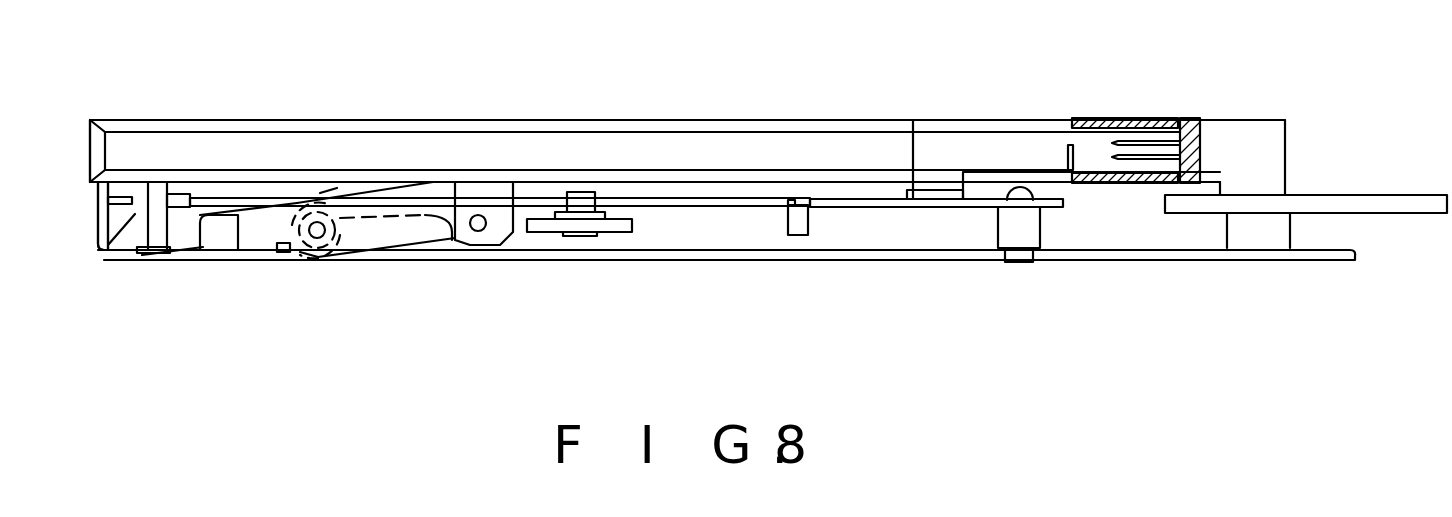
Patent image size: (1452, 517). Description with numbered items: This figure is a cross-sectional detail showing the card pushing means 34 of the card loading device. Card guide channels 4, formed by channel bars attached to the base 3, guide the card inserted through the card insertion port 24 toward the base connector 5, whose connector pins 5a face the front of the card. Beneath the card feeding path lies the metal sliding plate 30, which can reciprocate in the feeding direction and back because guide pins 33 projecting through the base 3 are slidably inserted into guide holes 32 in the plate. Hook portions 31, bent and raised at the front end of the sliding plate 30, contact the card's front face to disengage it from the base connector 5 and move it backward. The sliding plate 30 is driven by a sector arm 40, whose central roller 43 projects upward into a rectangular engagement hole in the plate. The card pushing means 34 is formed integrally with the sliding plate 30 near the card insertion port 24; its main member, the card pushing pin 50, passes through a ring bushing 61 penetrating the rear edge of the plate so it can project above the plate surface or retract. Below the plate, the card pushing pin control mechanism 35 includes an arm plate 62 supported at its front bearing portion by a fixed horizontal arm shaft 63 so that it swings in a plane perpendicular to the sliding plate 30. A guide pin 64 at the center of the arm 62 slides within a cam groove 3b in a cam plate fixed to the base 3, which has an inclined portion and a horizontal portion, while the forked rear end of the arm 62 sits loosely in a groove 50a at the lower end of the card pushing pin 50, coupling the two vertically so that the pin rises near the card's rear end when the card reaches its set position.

The base 3 is at (743, 261).
The cam groove 3b is at (395, 223).
The card guide channels 4 is at (780, 120).
The base connector 5 is at (1253, 120).
The connector pins 5a is at (1140, 137).
The card insertion port 24 is at (90, 132).
The sliding plate 30 is at (858, 208).
The hook portions 31 is at (1067, 152).
The guide holes 32 is at (950, 208).
The guide pins 33 is at (1045, 225).
The card pushing means 34 is at (159, 327).
The card pushing pin control mechanism 35 is at (356, 291).
The sector arm 40 is at (613, 233).
The roller 43 is at (599, 192).
The card pushing pin 50 is at (134, 230).
The groove 50a is at (170, 254).
The ring bushing 61 is at (97, 256).
The arm plate 62 is at (215, 243).
The arm shaft 63 is at (481, 262).
The guide pin 64 is at (317, 238).